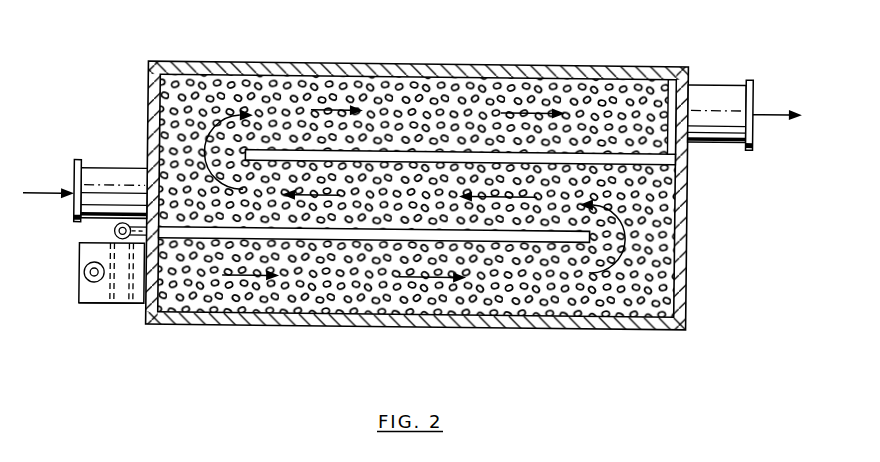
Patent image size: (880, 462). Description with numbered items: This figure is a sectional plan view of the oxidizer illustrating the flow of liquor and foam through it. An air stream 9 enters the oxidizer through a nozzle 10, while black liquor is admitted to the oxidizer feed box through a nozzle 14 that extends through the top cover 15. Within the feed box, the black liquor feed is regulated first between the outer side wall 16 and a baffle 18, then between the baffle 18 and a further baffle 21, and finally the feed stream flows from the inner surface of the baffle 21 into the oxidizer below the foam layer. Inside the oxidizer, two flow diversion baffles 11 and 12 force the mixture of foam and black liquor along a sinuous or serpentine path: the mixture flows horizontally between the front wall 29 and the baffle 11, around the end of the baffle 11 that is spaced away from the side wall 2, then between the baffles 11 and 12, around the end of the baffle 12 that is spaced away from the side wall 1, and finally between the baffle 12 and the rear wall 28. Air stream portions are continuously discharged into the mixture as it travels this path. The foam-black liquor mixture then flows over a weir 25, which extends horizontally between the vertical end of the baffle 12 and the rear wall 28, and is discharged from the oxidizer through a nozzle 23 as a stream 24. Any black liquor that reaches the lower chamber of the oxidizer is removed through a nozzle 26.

The side wall 1 is at (147, 96).
The side wall 2 is at (688, 214).
The air stream 9 is at (45, 198).
The nozzle 10 is at (103, 171).
The flow diversion baffle 11 is at (505, 241).
The flow diversion baffle 12 is at (392, 163).
The nozzle 14 is at (85, 279).
The top cover 15 is at (90, 306).
The outer side wall 16 is at (80, 306).
The baffle 18 is at (113, 306).
The baffle 21 is at (133, 306).
The nozzle 23 is at (708, 82).
The stream 24 is at (776, 112).
The weir 25 is at (676, 145).
The nozzle 26 is at (115, 230).
The rear wall 28 is at (403, 64).
The front wall 29 is at (401, 327).